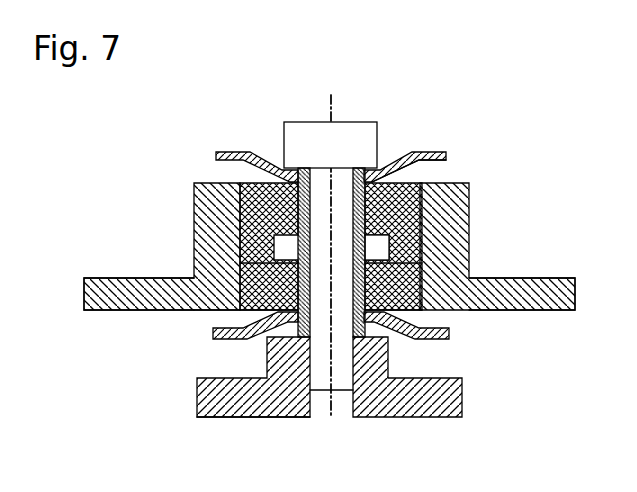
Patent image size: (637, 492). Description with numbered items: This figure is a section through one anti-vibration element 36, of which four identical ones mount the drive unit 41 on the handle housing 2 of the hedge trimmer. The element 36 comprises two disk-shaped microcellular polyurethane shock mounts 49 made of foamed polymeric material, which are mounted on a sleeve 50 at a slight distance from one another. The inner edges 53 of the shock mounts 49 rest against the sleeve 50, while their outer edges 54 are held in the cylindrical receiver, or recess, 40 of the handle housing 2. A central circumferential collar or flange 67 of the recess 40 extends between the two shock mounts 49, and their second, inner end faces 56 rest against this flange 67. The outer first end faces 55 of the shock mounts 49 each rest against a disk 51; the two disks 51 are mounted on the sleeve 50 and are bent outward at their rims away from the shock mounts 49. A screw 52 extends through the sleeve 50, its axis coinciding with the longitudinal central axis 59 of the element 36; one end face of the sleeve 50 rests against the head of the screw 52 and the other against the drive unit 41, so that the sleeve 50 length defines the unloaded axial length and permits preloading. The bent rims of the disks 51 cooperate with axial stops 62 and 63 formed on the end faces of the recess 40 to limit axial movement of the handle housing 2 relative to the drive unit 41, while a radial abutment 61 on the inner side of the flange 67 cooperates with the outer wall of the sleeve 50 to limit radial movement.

The handle housing 2 is at (500, 288).
The anti-vibration element 36 is at (444, 106).
The receiver 40 is at (200, 205).
The drive unit 41 is at (433, 412).
The microcellular polyurethane shock mount 49 is at (470, 192).
The sleeve 50 is at (430, 300).
The disk 51 is at (399, 170).
The screw 52 is at (313, 140).
The inner edge 53 is at (237, 177).
The outer edge 54 is at (235, 296).
The outer first end face 55 is at (423, 185).
The second inner end face 56 is at (280, 258).
The longitudinal central axis 59 is at (334, 109).
The radial abutment 61 is at (290, 417).
The axial stop 62 is at (442, 183).
The axial stop 63 is at (445, 323).
The circumferential flange 67 is at (398, 247).